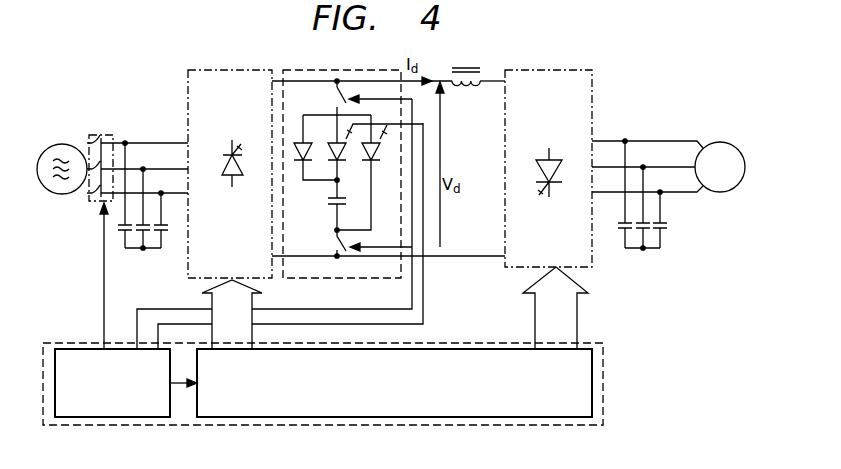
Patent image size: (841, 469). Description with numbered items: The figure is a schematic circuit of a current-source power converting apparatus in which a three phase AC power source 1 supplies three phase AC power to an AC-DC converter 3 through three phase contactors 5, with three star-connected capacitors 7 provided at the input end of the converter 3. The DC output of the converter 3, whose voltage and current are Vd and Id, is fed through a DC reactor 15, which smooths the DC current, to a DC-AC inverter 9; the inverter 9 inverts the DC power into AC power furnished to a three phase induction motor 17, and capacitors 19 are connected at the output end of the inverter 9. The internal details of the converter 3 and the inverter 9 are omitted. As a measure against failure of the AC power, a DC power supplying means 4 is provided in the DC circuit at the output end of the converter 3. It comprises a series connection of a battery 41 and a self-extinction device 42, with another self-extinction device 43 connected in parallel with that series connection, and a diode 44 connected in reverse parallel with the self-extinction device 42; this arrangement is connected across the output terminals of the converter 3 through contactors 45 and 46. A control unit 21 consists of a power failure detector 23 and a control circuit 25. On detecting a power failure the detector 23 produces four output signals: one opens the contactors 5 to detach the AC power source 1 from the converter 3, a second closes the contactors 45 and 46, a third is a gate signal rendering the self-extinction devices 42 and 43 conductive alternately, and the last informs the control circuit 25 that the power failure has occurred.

The three phase AC power source 1 is at (64, 144).
The AC-DC converter 3 is at (220, 70).
The DC power supplying means 4 is at (318, 70).
The three phase contactors 5 is at (105, 135).
The capacitors 7 is at (122, 234).
The DC-AC inverter 9 is at (552, 69).
The DC reactor 15 is at (470, 68).
The three phase induction motor 17 is at (722, 142).
The capacitors 19 is at (668, 226).
The control unit 21 is at (336, 427).
The power failure detector 23 is at (137, 418).
The control circuit 25 is at (490, 418).
The battery 41 is at (333, 203).
The self-extinction device 42 is at (347, 157).
The self-extinction device 43 is at (381, 157).
The diode 44 is at (302, 167).
The contactor 45 is at (334, 101).
The contactor 46 is at (334, 246).